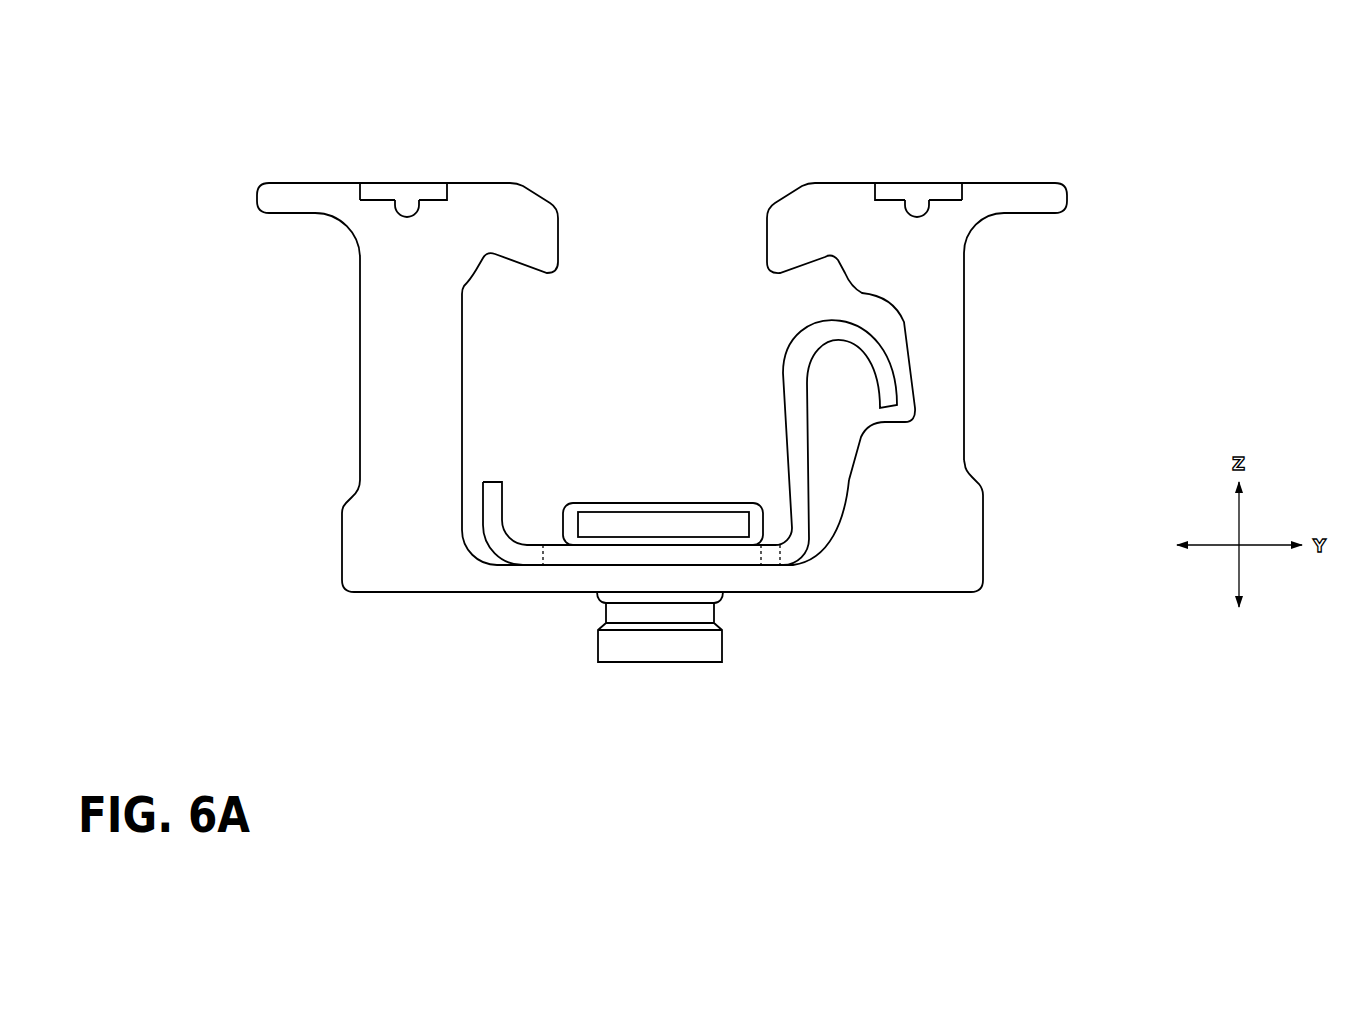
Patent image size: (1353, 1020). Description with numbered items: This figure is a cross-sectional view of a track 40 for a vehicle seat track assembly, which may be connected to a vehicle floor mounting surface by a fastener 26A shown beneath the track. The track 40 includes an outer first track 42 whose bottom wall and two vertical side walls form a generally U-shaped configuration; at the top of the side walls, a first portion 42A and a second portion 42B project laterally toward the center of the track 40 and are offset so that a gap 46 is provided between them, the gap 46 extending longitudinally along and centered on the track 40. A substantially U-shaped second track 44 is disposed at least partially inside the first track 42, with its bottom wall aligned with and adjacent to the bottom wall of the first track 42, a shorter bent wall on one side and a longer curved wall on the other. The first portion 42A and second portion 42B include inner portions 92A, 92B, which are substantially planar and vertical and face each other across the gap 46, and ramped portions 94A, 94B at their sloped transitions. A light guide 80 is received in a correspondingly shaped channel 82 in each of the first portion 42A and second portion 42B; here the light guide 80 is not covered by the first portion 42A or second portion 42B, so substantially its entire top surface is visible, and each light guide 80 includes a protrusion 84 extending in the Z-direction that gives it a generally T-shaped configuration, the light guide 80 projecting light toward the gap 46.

The track 40 is at (293, 108).
The first track 42 is at (992, 602).
The first portion 42A is at (470, 174).
The second portion 42B is at (859, 172).
The second track 44 is at (577, 569).
The gap 46 is at (658, 245).
The light guide 80 is at (375, 187).
The channel 82 is at (373, 190).
The protrusion 84 is at (407, 217).
The inner portion 92A is at (558, 240).
The inner portion 92B is at (763, 240).
The first ramped portion 94A is at (540, 192).
The second ramped portion 94B is at (780, 197).
The fastener 26A is at (643, 523).